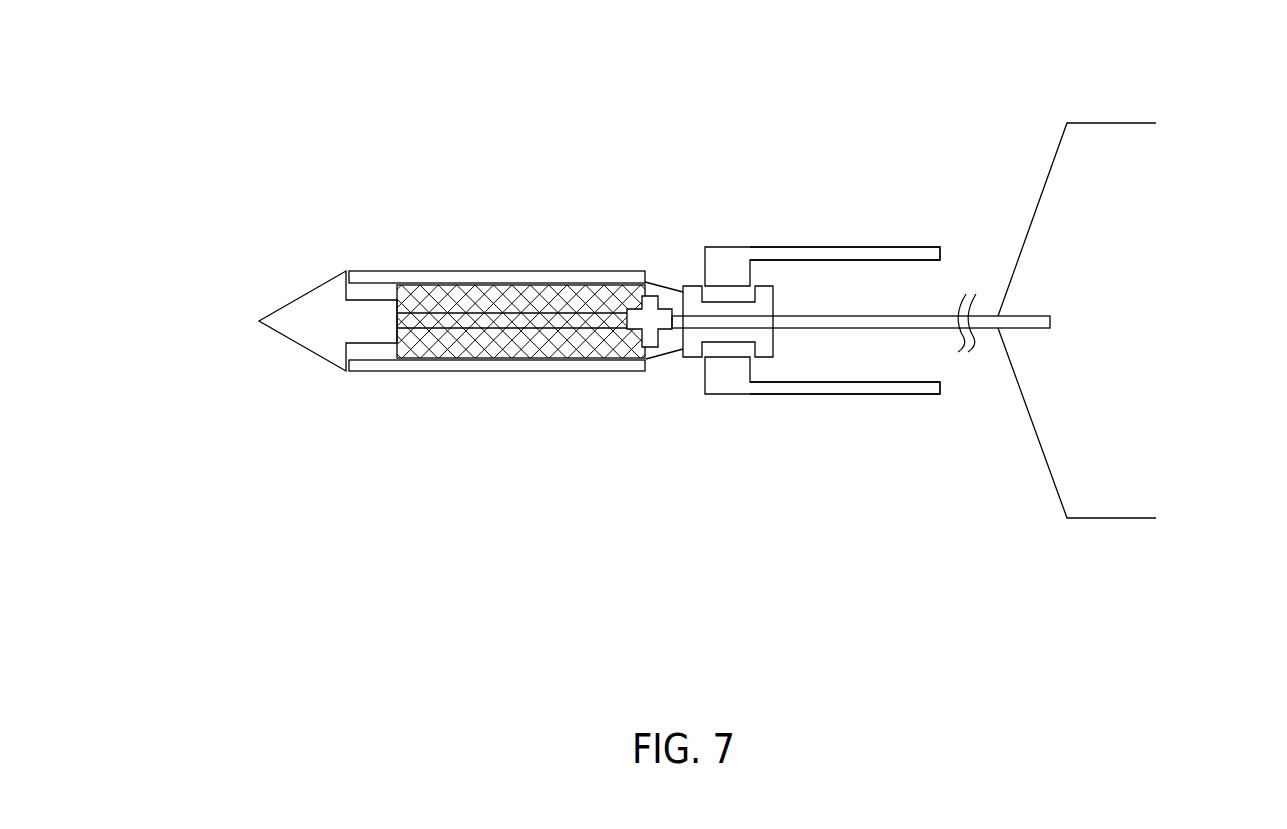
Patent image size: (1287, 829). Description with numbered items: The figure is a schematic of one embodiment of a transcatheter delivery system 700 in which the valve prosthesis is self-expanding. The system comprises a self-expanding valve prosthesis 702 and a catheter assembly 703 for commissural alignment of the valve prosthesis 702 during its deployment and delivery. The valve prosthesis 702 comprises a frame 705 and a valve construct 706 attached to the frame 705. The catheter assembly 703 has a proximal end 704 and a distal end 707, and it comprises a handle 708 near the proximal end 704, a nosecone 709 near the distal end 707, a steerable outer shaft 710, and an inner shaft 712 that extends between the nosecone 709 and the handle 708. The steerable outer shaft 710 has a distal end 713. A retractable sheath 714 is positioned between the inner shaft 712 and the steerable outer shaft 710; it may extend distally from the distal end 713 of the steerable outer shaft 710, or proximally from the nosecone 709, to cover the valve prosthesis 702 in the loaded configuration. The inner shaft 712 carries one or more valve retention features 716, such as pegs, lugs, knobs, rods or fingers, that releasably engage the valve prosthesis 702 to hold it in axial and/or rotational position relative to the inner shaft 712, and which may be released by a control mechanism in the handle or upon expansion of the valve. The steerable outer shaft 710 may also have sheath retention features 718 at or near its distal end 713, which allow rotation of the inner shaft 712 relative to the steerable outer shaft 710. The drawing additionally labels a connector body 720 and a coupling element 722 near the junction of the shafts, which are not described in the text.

The transcatheter delivery system 700 is at (386, 190).
The self-expanding valve prosthesis 702 is at (517, 368).
The catheter assembly 703 is at (682, 240).
The proximal end 704 is at (947, 323).
The frame 705 is at (607, 362).
The valve construct 706 is at (480, 365).
The distal end 707 is at (257, 325).
The handle 708 is at (1100, 117).
The nosecone 709 is at (297, 305).
The steerable outer shaft 710 is at (893, 245).
The inner shaft 712 is at (983, 340).
The distal end of the steerable outer shaft 713 is at (703, 396).
The retractable sheath 714 is at (458, 268).
The valve retention features 716 is at (643, 272).
The sheath retention features 718 is at (740, 272).
The connector body 720 is at (768, 297).
The cross coupling 722 is at (654, 352).